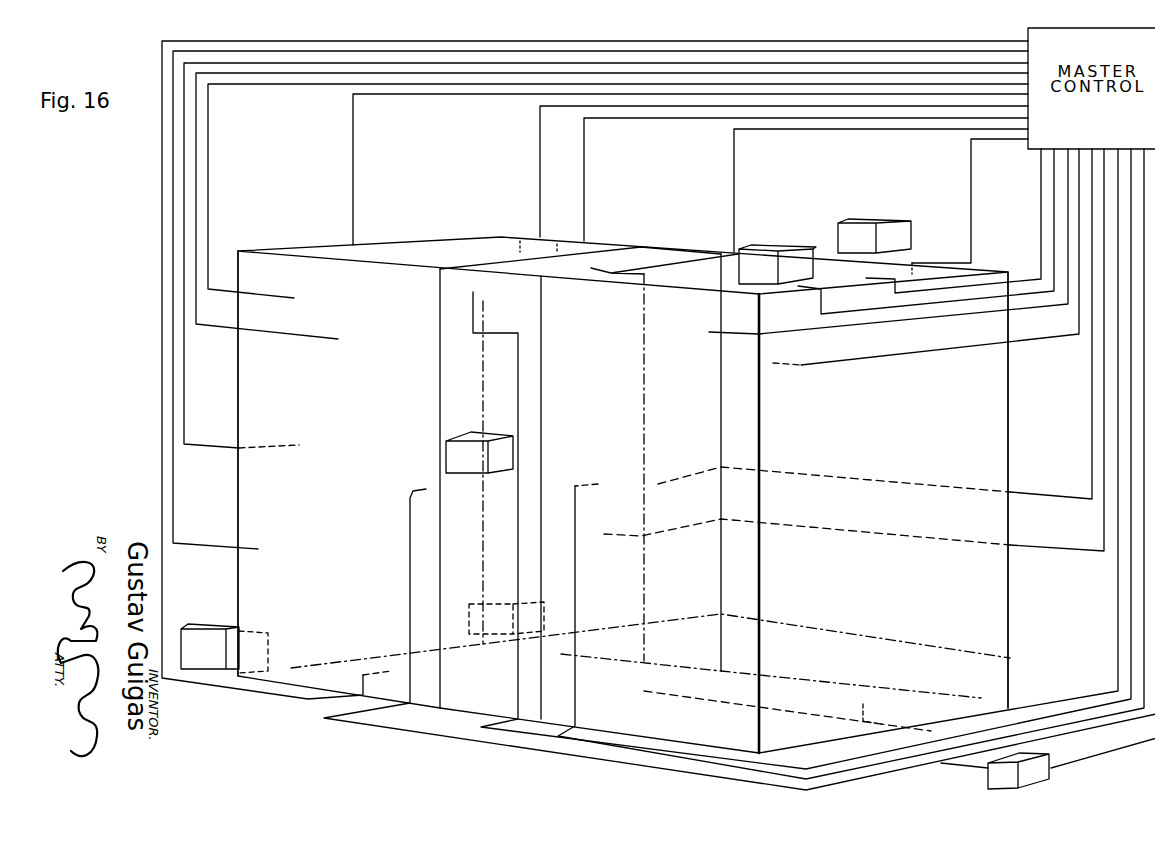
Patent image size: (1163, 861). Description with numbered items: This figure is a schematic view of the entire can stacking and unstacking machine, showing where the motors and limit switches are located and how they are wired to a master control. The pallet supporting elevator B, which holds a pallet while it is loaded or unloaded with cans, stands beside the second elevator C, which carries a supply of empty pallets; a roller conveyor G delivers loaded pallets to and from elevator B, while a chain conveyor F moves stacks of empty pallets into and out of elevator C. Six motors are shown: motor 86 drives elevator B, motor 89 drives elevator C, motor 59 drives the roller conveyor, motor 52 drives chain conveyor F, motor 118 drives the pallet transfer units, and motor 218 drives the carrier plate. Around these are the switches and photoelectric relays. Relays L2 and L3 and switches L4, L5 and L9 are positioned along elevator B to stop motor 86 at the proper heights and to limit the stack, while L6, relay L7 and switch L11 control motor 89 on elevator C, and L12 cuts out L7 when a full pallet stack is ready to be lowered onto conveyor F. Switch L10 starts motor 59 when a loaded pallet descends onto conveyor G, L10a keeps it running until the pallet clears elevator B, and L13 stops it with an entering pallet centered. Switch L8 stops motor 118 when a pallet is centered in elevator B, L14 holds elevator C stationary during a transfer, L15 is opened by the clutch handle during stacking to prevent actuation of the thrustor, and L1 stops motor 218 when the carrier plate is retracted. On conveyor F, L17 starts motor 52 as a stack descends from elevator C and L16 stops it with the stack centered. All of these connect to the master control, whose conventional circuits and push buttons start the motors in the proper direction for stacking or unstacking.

The limit switch L1 is at (835, 223).
The photoelectric relay L2 is at (618, 196).
The photoelectric relay L3 is at (612, 211).
The limit switch L4 is at (606, 259).
The limit switch L5 is at (739, 469).
The limit switch L6 is at (946, 221).
The photoelectric relay L7 is at (882, 237).
The limit switch L8 is at (690, 179).
The limit switch L9 is at (600, 306).
The limit switch L10 is at (849, 350).
The limit switch L10a is at (869, 324).
The limit switch L11 is at (851, 464).
The limit switch L12 is at (921, 257).
The limit switch L13 is at (595, 370).
The limit switch L14 is at (801, 459).
The limit switch L15 is at (797, 285).
The limit switch L16 is at (786, 701).
The limit switch L17 is at (862, 706).
The motor 52 is at (998, 777).
The motor 59 is at (507, 583).
The motor 86 is at (215, 628).
The motor 89 is at (880, 217).
The motor 118 is at (502, 429).
The motor 218 is at (790, 235).
The pallet supporting elevator B is at (294, 463).
The second elevator C is at (938, 490).
The roller conveyor G is at (650, 633).
The chain conveyor F is at (1103, 751).